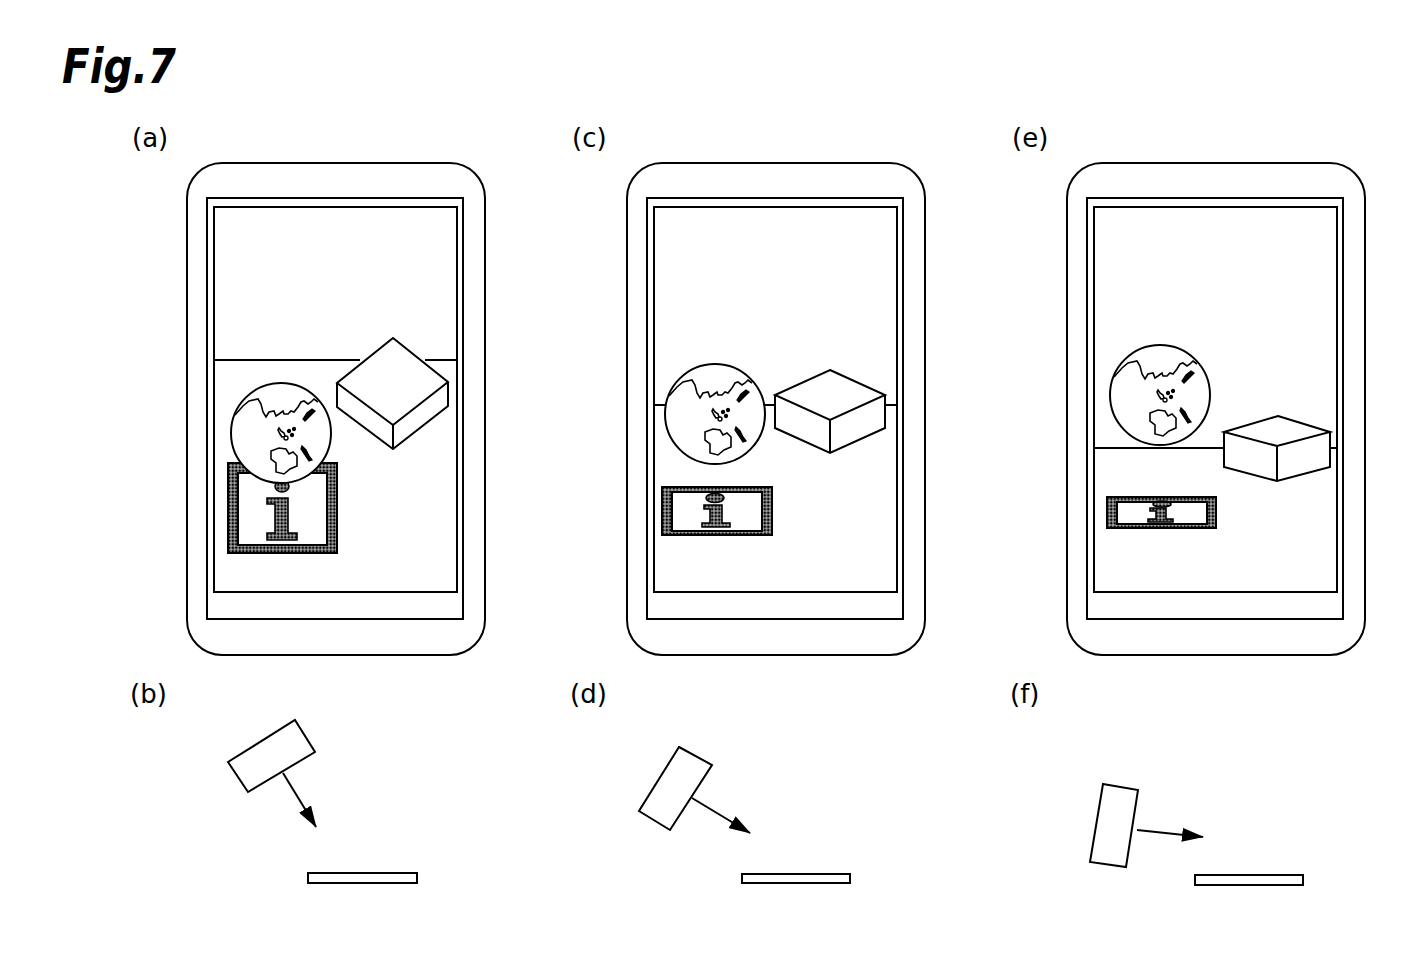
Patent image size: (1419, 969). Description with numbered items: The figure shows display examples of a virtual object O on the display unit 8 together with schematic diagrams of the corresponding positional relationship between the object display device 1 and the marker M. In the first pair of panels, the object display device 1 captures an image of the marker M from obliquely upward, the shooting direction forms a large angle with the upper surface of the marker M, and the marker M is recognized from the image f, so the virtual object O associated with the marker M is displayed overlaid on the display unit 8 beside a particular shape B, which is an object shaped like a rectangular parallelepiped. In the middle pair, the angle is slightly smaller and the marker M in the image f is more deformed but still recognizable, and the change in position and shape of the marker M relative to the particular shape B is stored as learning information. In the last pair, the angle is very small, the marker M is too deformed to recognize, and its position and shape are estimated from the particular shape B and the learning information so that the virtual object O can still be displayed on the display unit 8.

The display unit 8 is at (418, 163).
The image f is at (440, 207).
The virtual object O is at (263, 393).
The particular shape B is at (420, 382).
The marker M is at (252, 508).
The object display device 1 is at (236, 778).